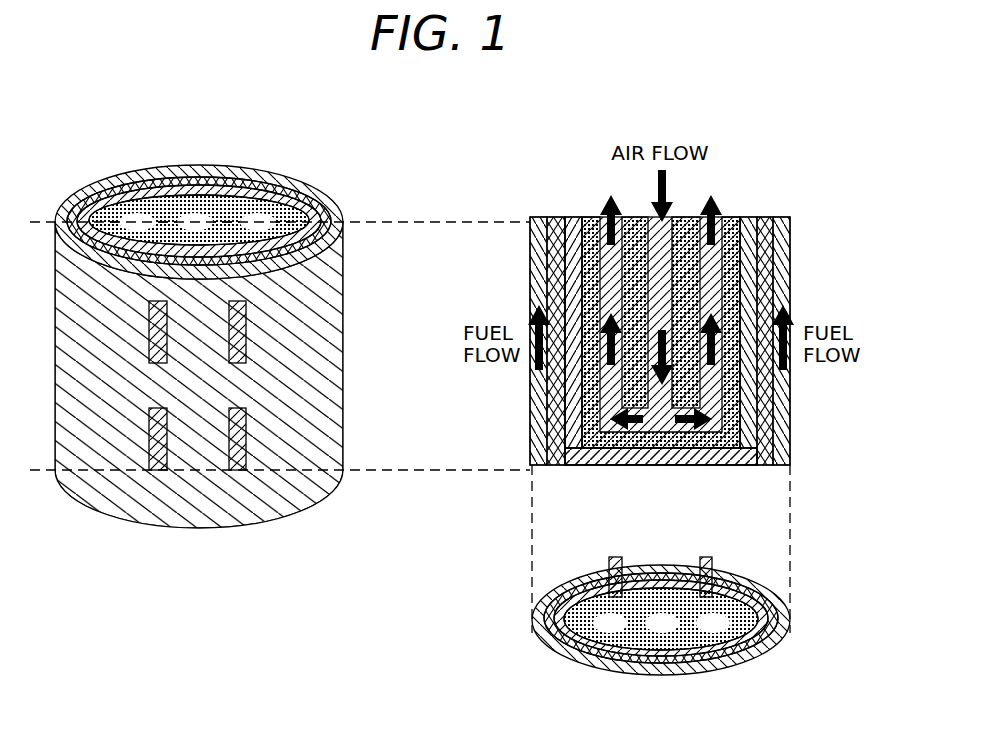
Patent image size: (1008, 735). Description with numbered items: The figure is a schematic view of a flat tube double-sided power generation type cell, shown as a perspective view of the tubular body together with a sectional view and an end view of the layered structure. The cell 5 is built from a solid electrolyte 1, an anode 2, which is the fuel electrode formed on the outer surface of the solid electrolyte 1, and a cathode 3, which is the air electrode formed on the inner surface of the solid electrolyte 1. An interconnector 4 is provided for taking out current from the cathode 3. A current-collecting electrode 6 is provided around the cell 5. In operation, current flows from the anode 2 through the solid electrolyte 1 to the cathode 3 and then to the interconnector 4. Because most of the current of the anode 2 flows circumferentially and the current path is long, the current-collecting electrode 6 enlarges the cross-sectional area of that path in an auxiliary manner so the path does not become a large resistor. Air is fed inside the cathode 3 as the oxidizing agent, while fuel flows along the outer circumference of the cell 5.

The solid electrolyte 1 is at (280, 186).
The anode 2 is at (268, 175).
The cathode 3 is at (447, 418).
The interconnector 4 is at (240, 434).
The cell 5 is at (465, 390).
The current-collecting electrode 6 is at (313, 318).